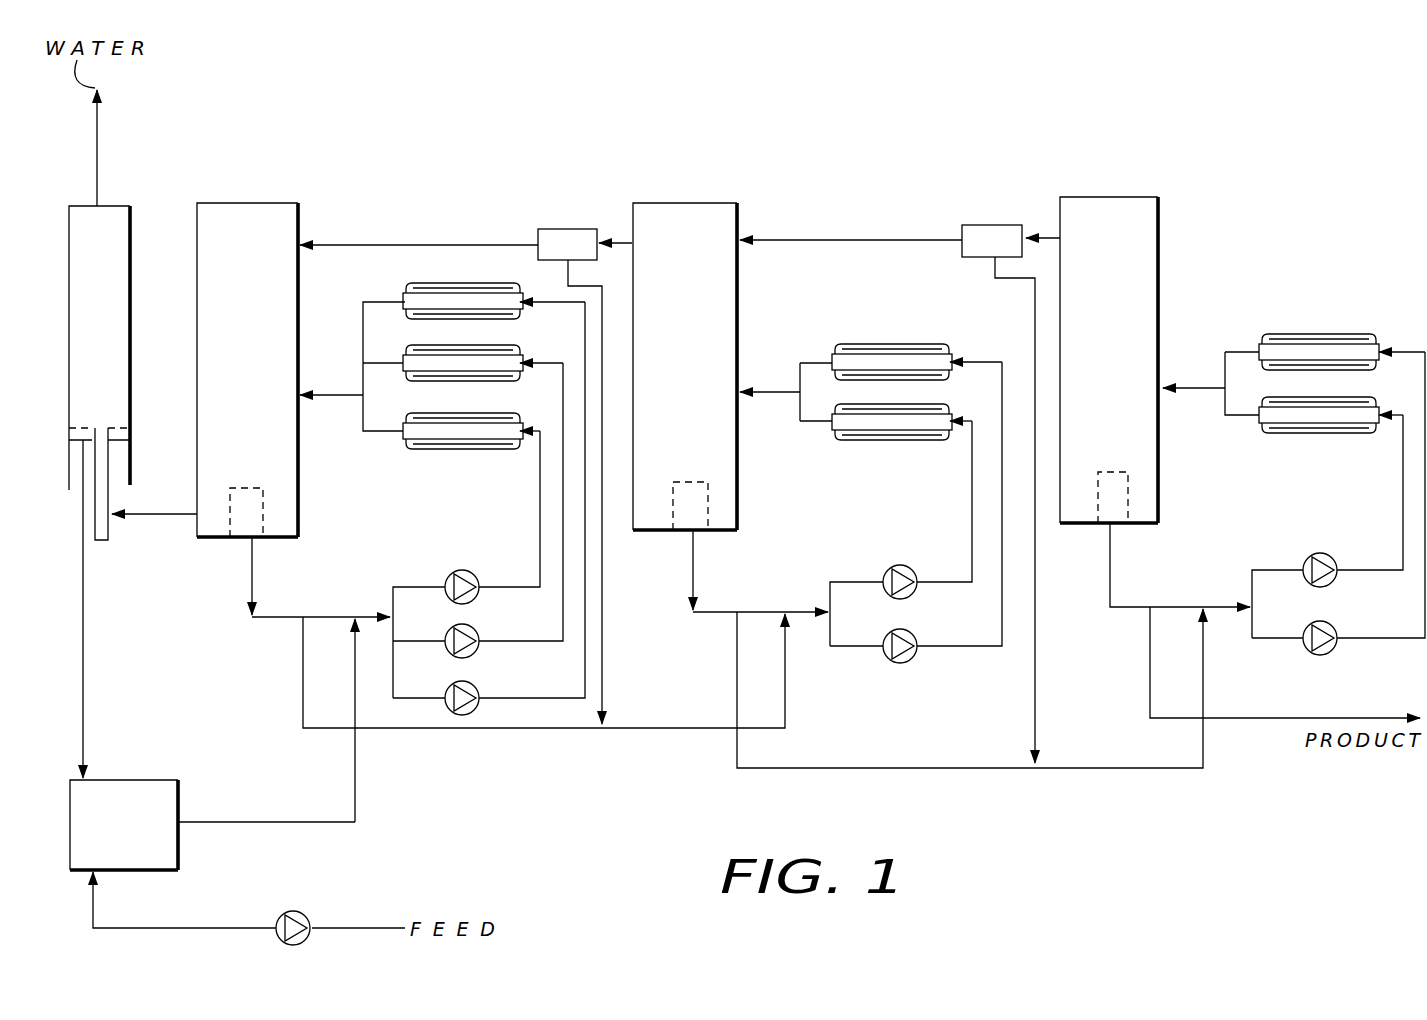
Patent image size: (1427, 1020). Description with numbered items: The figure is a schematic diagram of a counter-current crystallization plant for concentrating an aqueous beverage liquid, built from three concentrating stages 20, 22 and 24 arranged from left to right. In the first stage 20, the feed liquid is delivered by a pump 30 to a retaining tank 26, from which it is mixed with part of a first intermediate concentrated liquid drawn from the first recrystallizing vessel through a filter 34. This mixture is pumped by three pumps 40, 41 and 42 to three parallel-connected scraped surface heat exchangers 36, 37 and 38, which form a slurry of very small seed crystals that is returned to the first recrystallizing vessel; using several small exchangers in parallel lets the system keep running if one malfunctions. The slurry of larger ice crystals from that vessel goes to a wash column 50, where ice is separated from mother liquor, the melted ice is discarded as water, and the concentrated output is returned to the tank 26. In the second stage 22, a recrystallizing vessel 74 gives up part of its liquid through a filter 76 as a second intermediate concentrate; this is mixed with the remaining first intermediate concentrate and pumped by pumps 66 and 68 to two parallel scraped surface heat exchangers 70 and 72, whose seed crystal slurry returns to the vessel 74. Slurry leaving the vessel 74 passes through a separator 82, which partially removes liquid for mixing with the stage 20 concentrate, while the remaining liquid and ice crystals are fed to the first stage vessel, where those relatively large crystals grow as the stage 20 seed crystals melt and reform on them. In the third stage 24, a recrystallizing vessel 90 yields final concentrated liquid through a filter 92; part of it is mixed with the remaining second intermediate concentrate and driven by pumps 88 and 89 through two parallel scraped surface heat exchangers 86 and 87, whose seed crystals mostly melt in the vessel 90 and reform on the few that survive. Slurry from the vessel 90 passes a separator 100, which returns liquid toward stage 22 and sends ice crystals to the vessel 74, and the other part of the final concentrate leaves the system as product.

The concentrating stage 20 is at (470, 78).
The concentrating stage 22 is at (953, 128).
The concentrating stage 24 is at (1277, 200).
The retaining tank 26 is at (202, 763).
The pump 30 is at (305, 888).
The filter 34 is at (236, 505).
The scraped surface heat exchanger 36 is at (528, 240).
The scraped surface heat exchanger 37 is at (522, 320).
The scraped surface heat exchanger 38 is at (440, 432).
The pump 40 is at (486, 552).
The pump 41 is at (478, 631).
The pump 42 is at (481, 689).
The wash column 50 is at (120, 205).
The pump 66 is at (921, 551).
The pump 68 is at (896, 664).
The scraped surface heat exchanger 70 is at (912, 343).
The scraped surface heat exchanger 72 is at (880, 426).
The recrystallizing vessel 74 is at (705, 388).
The filter 76 is at (665, 516).
The separator 82 is at (592, 228).
The scraped surface heat exchanger 86 is at (1347, 336).
The scraped surface heat exchanger 87 is at (1340, 434).
The pump 88 is at (1326, 585).
The pump 89 is at (1323, 656).
The recrystallizing vessel 90 is at (1125, 381).
The filter 92 is at (1094, 507).
The separator 100 is at (982, 225).